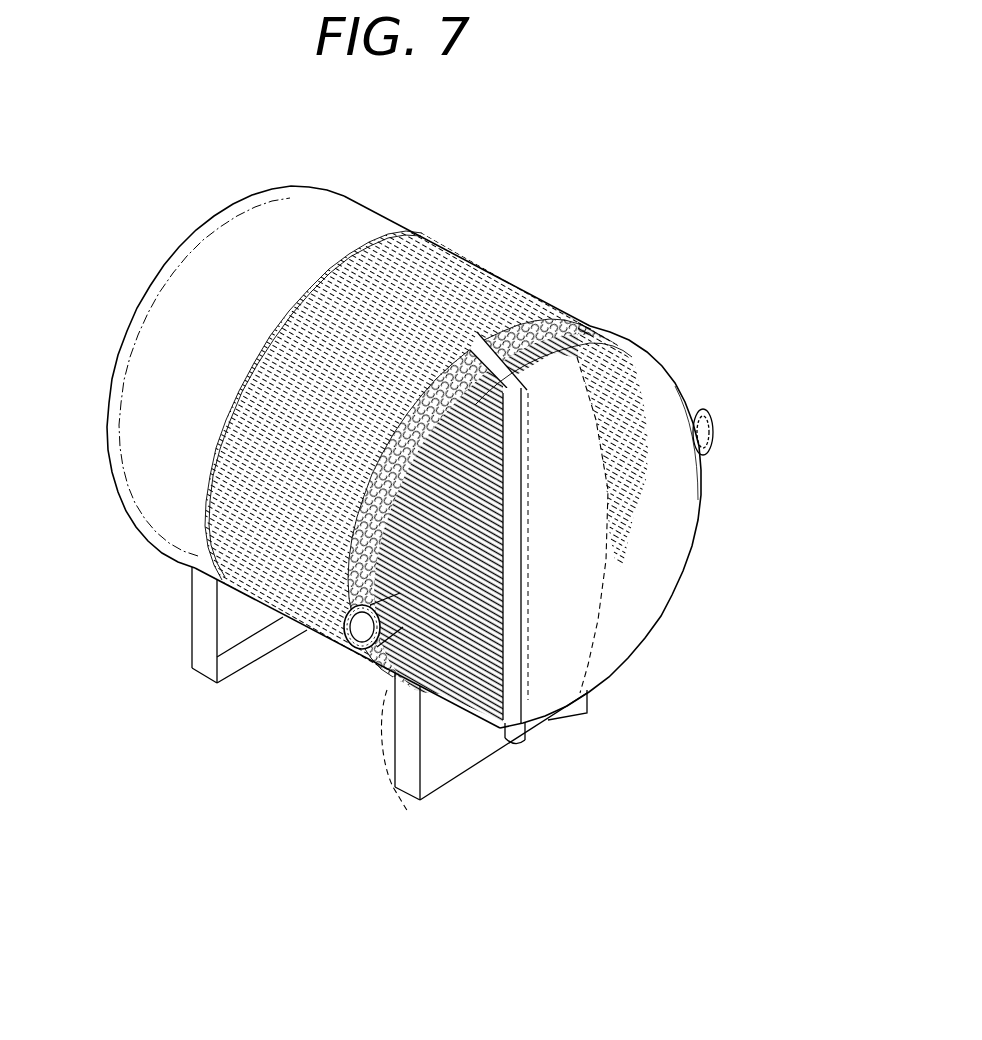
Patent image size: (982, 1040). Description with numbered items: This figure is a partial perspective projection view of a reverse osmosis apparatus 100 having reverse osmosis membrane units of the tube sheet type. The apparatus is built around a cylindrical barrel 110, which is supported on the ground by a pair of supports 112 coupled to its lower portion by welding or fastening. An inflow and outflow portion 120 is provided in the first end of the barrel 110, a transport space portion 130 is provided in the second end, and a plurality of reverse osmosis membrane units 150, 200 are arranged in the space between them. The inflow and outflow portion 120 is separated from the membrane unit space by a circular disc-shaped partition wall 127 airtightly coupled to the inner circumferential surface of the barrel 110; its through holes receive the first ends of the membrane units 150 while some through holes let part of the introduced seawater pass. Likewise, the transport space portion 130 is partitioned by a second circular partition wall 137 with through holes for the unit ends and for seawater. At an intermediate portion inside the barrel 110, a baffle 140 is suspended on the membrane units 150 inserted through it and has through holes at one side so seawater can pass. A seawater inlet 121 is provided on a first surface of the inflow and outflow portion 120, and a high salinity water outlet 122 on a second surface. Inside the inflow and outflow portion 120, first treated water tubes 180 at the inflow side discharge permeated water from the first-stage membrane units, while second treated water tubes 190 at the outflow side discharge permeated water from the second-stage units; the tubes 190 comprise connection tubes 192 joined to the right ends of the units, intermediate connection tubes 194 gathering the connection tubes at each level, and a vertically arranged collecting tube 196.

The reverse osmosis apparatus 100 is at (420, 188).
The barrel 110 is at (517, 287).
The supports 112 is at (207, 663).
The inflow and outflow portion 120 is at (657, 380).
The seawater inlet 121 is at (744, 432).
The high salinity water outlet 122 is at (343, 627).
The partition wall 127 is at (508, 478).
The transport space portion 130 is at (195, 323).
The partition wall 137 is at (233, 326).
The baffle 140 is at (600, 528).
The reverse osmosis membrane units 150 is at (426, 450).
The reverse osmosis membrane units 200 is at (426, 450).
The first treated water tubes 180 is at (555, 720).
The second treated water tubes 190 is at (573, 833).
The connection tubes 192 is at (435, 777).
The intermediate connection tube 194 is at (503, 774).
The collecting tube 196 is at (557, 764).